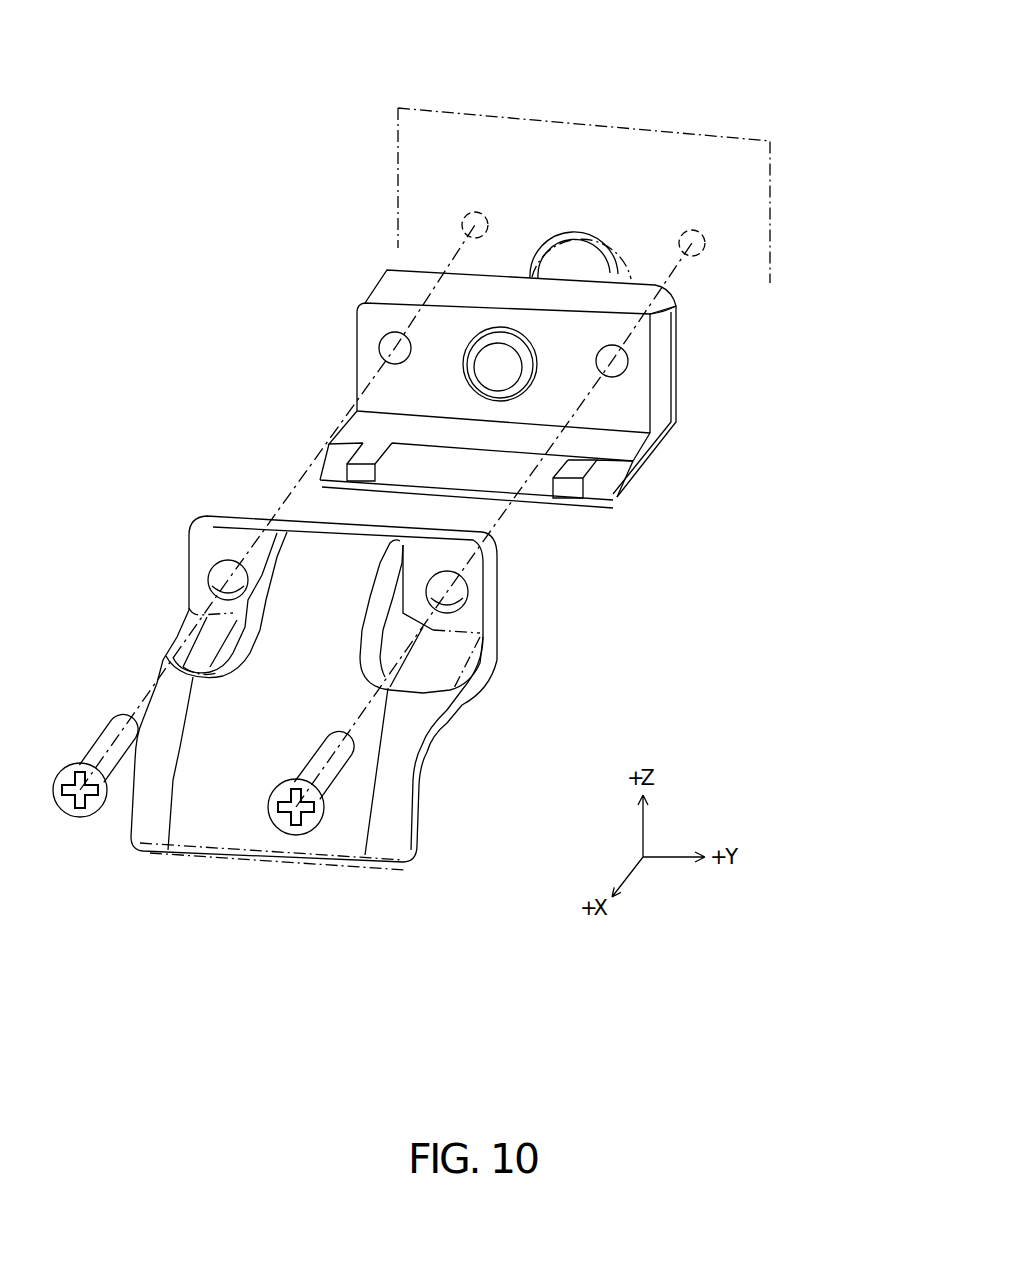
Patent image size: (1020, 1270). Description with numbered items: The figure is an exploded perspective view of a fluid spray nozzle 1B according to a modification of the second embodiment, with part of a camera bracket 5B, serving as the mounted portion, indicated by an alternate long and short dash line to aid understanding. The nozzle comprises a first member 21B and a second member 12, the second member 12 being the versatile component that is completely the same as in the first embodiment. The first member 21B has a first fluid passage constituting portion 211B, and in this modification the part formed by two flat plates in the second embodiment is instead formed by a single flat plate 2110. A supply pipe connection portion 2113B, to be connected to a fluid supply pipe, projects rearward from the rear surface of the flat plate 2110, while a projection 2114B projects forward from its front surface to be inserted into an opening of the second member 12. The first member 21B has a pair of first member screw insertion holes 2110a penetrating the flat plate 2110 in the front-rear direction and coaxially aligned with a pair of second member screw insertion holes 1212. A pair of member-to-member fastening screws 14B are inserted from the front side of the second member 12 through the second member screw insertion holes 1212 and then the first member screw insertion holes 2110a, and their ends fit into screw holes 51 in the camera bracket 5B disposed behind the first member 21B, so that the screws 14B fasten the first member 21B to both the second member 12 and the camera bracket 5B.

The camera bracket 5B is at (450, 110).
The screw holes 51 is at (463, 226).
The supply pipe connection portion 2113B is at (540, 277).
The fluid spray nozzle 1B is at (185, 294).
The first member 21B is at (295, 312).
The flat plate 2110 is at (373, 288).
The first fluid passage constituting portion 211B is at (692, 316).
The first member screw insertion holes 2110a is at (379, 349).
The projection 2114B is at (463, 377).
The second member 12 is at (207, 516).
The second member screw insertion holes 1212 is at (206, 586).
The member-to-member fastening screws 14B is at (290, 834).